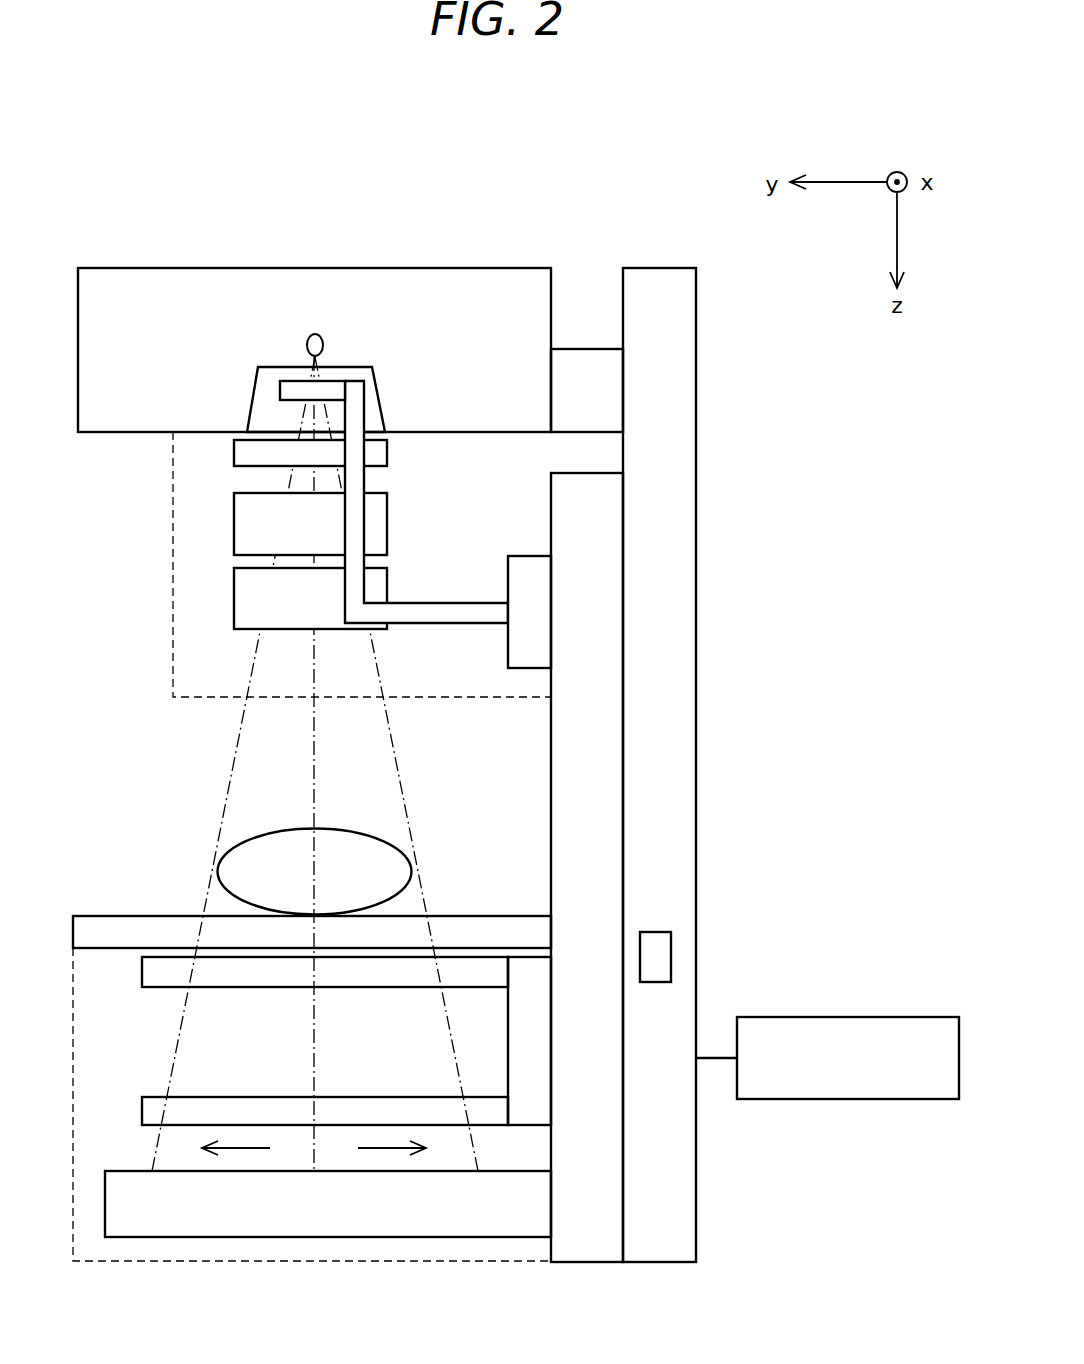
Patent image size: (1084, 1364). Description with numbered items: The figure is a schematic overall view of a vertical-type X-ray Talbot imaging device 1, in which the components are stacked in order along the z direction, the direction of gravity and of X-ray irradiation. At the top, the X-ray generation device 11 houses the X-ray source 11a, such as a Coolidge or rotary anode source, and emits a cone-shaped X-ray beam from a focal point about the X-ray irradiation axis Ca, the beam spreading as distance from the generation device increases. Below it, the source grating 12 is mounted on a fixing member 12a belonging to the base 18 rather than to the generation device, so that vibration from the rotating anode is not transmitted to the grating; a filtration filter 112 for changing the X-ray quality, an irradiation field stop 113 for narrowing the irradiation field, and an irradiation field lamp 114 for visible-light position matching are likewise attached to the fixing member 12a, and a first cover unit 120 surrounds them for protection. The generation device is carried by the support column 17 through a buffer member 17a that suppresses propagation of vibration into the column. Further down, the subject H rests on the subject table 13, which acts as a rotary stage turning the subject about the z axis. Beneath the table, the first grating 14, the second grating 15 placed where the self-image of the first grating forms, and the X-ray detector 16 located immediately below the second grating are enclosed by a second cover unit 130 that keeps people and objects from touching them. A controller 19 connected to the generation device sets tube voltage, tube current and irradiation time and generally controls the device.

The X-ray Talbot imaging device 1 is at (588, 164).
The X-ray generation device 11 is at (440, 268).
The X-ray source 11a is at (323, 344).
The source grating 12 is at (297, 386).
The fixing member 12a is at (450, 625).
The filtration filter 112 is at (233, 453).
The irradiation field stop 113 is at (233, 507).
The irradiation field lamp 114 is at (233, 583).
The first cover unit 120 is at (173, 675).
The subject table 13 is at (462, 916).
The first grating 14 is at (367, 987).
The second grating 15 is at (196, 1097).
The X-ray detector 16 is at (125, 1171).
The support column 17 is at (683, 364).
The buffer member 17a is at (567, 349).
The base 18 is at (615, 531).
The controller 19 is at (912, 1017).
The second cover unit 130 is at (73, 948).
The subject H is at (262, 836).
The X-ray irradiation axis Ca is at (315, 1154).